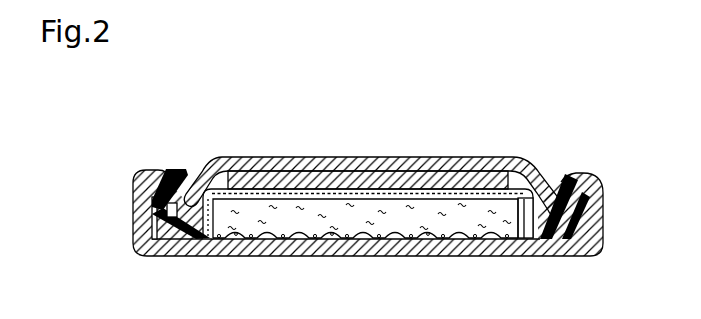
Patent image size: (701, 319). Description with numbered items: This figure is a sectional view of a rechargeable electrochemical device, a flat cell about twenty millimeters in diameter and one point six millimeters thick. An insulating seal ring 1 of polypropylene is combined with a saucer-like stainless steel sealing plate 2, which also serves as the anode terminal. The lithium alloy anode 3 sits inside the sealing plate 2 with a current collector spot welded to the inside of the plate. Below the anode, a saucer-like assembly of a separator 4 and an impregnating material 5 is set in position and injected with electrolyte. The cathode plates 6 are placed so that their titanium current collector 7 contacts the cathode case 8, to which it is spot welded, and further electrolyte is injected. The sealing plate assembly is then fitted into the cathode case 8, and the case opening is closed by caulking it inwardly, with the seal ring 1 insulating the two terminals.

The insulating seal ring 1 is at (181, 170).
The sealing plate 2 is at (364, 165).
The lithium alloy anode 3 is at (410, 182).
The separator 4 is at (449, 190).
The impregnating material 5 is at (327, 197).
The cathode plates 6 is at (306, 216).
The titanium current collector 7 is at (434, 232).
The cathode case 8 is at (586, 186).